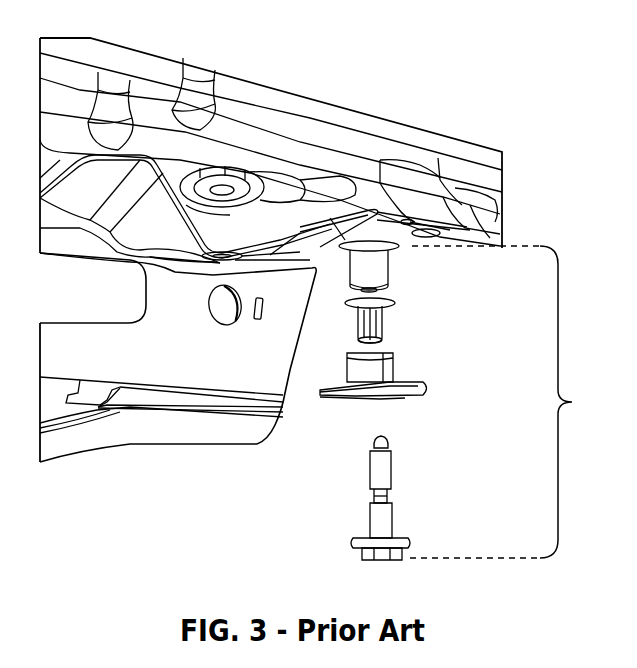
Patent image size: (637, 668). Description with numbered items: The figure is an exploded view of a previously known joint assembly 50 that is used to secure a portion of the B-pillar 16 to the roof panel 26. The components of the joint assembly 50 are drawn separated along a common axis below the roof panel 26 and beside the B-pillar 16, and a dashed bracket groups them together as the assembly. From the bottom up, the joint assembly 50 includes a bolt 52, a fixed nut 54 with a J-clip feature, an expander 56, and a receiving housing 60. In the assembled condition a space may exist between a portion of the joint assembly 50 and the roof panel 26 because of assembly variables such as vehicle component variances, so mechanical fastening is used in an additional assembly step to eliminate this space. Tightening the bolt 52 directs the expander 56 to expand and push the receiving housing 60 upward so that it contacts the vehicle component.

The B-pillar 16 is at (46, 470).
The roof panel 26 is at (337, 123).
The joint assembly 50 is at (510, 402).
The bolt 52 is at (394, 518).
The fixed nut 54 is at (395, 370).
The expander 56 is at (383, 318).
The receiving housing 60 is at (389, 265).